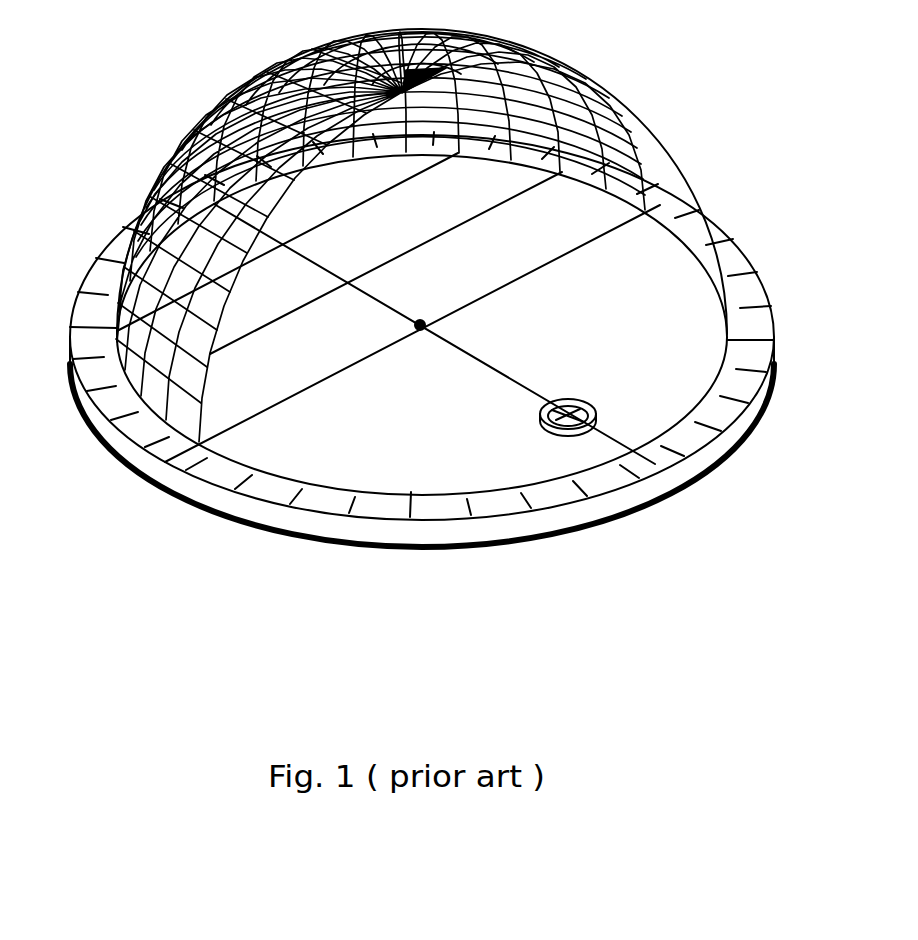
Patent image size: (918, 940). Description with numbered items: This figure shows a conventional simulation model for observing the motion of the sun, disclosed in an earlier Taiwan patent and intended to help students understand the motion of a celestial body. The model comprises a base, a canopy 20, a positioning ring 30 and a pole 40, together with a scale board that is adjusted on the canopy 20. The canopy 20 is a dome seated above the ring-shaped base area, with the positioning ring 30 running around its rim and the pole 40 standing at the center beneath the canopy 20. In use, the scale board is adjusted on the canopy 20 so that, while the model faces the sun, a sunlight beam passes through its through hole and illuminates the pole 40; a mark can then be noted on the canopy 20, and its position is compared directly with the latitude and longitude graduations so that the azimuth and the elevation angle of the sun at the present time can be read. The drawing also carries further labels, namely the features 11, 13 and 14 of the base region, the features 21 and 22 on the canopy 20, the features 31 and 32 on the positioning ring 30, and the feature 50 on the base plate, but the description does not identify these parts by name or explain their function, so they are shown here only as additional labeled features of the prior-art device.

The base plate 11 is at (393, 474).
The diametral line 13 is at (510, 375).
The strip 14 is at (302, 310).
The canopy 20 is at (668, 142).
The longitude grid lines 21 is at (344, 154).
The latitude grid lines 22 is at (314, 170).
The positioning ring 30 is at (759, 261).
The major graduations 31 is at (753, 368).
The minor graduations 32 is at (767, 320).
The pole 40 is at (421, 331).
The disc 50 is at (591, 402).